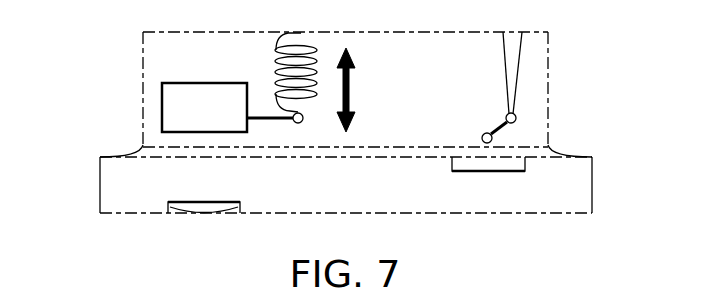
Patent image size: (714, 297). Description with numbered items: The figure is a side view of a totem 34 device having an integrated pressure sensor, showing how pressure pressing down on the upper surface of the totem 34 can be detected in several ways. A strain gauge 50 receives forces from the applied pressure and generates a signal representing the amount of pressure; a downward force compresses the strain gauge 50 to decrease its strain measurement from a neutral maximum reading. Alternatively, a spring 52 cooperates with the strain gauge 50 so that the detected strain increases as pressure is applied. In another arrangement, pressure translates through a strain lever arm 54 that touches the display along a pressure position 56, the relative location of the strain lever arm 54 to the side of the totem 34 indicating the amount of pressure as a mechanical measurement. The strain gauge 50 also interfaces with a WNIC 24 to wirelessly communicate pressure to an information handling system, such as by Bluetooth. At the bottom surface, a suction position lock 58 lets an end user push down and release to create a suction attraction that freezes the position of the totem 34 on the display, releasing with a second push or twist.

The WNIC 24 is at (162, 108).
The totem 34 is at (100, 185).
The strain gauge 50 is at (265, 121).
The spring 52 is at (277, 68).
The strain lever arm 54 is at (503, 72).
The pressure position 56 is at (490, 172).
The suction position lock 58 is at (205, 213).